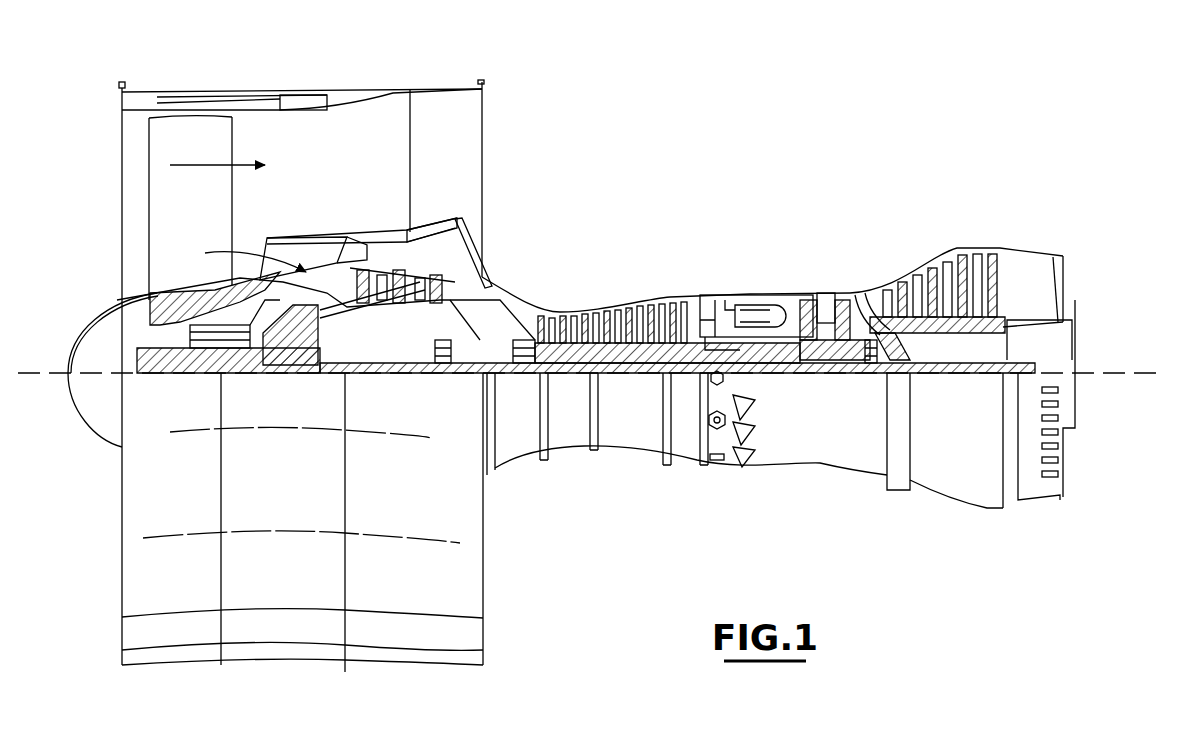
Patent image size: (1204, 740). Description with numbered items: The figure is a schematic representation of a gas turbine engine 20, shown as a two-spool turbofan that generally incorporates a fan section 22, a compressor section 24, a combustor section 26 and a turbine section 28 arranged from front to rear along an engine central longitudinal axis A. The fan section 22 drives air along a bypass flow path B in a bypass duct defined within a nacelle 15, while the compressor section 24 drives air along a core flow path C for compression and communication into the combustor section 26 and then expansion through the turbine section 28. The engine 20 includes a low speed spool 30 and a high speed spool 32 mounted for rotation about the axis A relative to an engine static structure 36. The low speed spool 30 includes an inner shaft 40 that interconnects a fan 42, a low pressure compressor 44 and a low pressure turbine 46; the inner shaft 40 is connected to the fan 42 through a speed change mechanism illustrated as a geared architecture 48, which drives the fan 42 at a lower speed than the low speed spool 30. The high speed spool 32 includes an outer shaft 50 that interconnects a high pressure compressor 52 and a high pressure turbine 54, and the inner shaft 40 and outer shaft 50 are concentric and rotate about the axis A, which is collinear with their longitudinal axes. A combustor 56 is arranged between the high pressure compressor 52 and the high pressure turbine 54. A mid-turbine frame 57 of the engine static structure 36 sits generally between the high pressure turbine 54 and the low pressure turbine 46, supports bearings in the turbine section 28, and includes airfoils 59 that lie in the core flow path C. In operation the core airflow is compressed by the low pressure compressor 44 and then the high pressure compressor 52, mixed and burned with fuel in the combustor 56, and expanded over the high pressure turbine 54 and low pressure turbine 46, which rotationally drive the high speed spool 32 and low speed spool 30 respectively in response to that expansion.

The nacelle 15 is at (303, 93).
The gas turbine engine 20 is at (764, 141).
The fan section 22 is at (276, 342).
The compressor section 24 is at (483, 284).
The combustor section 26 is at (747, 279).
The turbine section 28 is at (937, 333).
The low speed spool 30 is at (640, 378).
The high speed spool 32 is at (680, 320).
The engine static structure 36 is at (682, 462).
The inner shaft 40 is at (513, 373).
The fan 42 is at (176, 218).
The low pressure compressor 44 is at (413, 277).
The low pressure turbine 46 is at (947, 257).
The geared architecture 48 is at (310, 357).
The outer shaft 50 is at (757, 353).
The high pressure compressor 52 is at (617, 343).
The high pressure turbine 54 is at (823, 310).
The combustor 56 is at (757, 317).
The mid-turbine frame 57 is at (869, 281).
The airfoils 59 is at (878, 333).
The engine central longitudinal axis A is at (1153, 373).
The bypass flow path B is at (205, 165).
The core flow path C is at (244, 255).